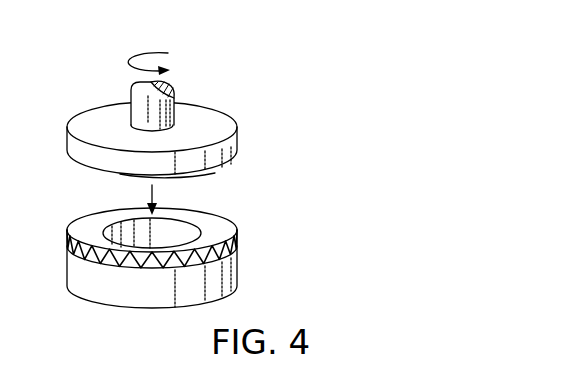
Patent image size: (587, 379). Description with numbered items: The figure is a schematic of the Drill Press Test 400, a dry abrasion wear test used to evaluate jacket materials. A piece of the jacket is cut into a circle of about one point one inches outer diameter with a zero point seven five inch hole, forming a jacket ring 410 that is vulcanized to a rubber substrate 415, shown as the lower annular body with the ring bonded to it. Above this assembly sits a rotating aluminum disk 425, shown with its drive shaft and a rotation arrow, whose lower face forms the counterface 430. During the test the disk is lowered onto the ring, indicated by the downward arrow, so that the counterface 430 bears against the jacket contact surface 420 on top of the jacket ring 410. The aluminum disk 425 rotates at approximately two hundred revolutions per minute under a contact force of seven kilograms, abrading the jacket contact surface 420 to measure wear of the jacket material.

The Drill Press Test 400 is at (323, 71).
The rotating aluminum disk 425 is at (236, 123).
The counterface 430 is at (221, 180).
The jacket contact surface 420 is at (86, 216).
The jacket ring 410 is at (227, 246).
The rubber substrate 415 is at (238, 273).